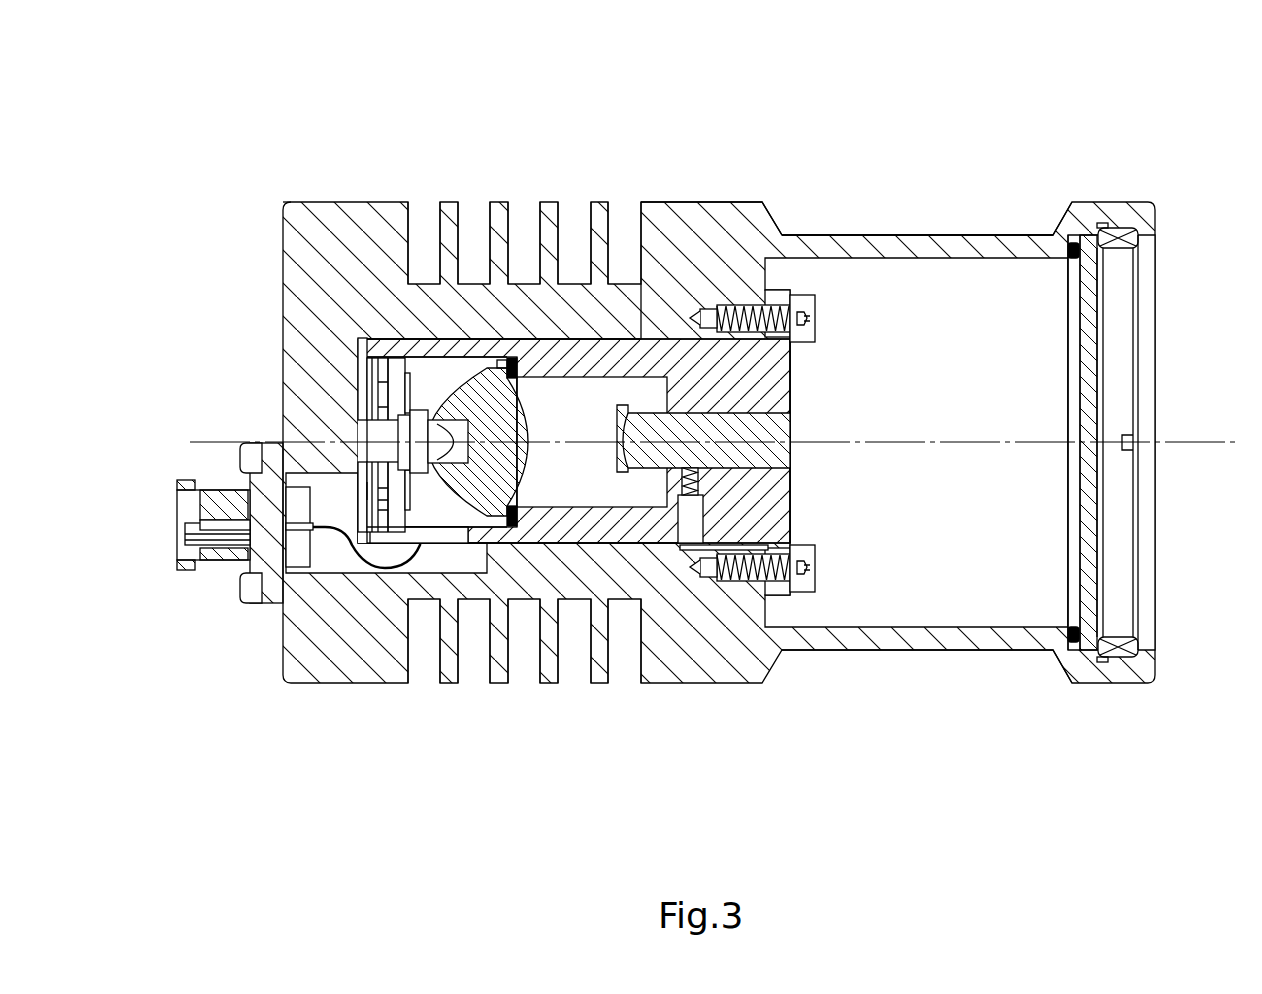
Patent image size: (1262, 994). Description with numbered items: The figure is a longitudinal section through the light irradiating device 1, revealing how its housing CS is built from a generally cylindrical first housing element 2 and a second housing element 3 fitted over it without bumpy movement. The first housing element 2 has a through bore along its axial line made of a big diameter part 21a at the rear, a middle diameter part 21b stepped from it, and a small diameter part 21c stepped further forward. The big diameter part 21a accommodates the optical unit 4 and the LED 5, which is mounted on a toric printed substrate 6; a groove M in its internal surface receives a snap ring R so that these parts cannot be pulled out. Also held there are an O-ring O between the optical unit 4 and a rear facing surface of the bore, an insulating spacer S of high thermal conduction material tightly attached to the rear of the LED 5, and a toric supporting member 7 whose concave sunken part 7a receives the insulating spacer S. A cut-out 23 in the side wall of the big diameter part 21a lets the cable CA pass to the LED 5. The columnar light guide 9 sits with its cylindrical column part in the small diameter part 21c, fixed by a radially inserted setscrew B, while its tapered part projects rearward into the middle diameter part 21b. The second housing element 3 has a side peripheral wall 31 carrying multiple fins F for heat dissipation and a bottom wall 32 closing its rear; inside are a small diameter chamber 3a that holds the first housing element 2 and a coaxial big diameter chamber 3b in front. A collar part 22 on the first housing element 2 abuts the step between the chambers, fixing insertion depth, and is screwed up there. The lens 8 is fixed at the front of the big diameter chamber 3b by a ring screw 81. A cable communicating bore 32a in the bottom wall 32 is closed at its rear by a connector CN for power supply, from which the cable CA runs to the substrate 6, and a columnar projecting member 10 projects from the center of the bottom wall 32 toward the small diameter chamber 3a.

The light irradiating device 1 is at (527, 135).
The first housing element 2 is at (800, 390).
The second housing element 3 is at (925, 222).
The small diameter chamber 3a is at (633, 338).
The big diameter chamber 3b is at (1010, 396).
The optical unit 4 is at (528, 433).
The LED 5 is at (415, 407).
The printed substrate 6 is at (408, 375).
The supporting member 7 is at (387, 357).
The concave sunken part 7a is at (390, 492).
The lens 8 is at (1097, 313).
The ring screw 81 is at (1138, 240).
The light guide 9 is at (783, 455).
The projecting member 10 is at (398, 437).
The big diameter part 21a is at (520, 340).
The middle diameter part 21b is at (607, 505).
The small diameter part 21c is at (763, 477).
The collar part 22 is at (800, 290).
The cut-out 23 is at (443, 537).
The side peripheral wall 31 is at (700, 202).
The bottom wall 32 is at (283, 280).
The cable communicating bore 32a is at (340, 590).
The setscrew B is at (695, 497).
The cable CA is at (352, 557).
The connector CN is at (190, 580).
The housing CS is at (812, 205).
The fins F is at (442, 683).
The groove M is at (362, 350).
The O-ring O is at (520, 492).
The snap ring R is at (385, 368).
The insulating spacer S is at (412, 458).